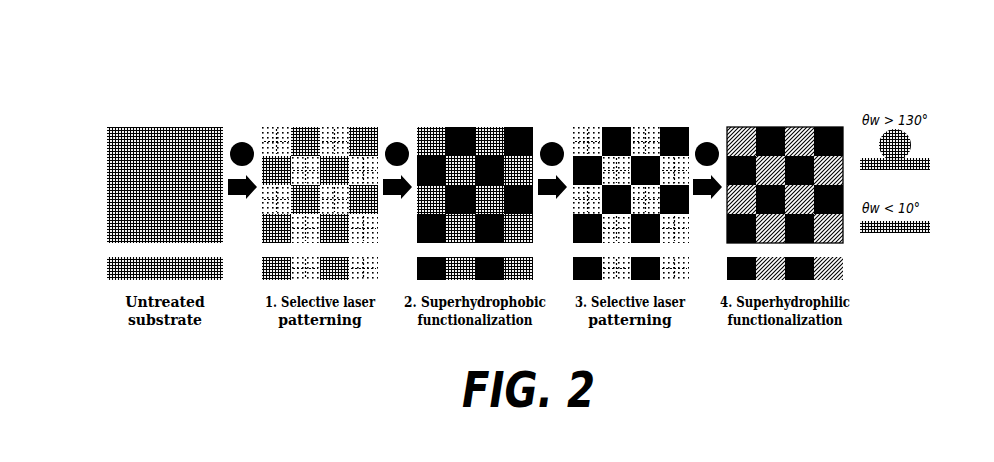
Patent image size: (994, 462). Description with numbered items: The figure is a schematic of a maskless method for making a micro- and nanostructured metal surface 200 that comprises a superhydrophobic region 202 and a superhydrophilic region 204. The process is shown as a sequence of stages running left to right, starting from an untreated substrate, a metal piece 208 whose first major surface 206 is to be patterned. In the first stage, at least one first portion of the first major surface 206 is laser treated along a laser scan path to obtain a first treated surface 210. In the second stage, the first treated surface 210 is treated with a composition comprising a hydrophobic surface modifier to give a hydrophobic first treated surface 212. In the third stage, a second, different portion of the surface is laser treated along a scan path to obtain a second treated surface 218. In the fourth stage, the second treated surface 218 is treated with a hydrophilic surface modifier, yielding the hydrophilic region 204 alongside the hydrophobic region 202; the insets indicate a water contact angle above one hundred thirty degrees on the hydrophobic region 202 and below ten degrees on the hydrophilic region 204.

The micro- and nanostructured metal surface 200 is at (792, 86).
The hydrophobic region 202 is at (600, 131).
The hydrophilic region 204 is at (832, 222).
The first major surface 206 is at (107, 259).
The metal piece 208 is at (107, 266).
The first treated surface 210 is at (333, 92).
The hydrophobic first treated surface 212 is at (488, 95).
The second treated surface 218 is at (647, 128).